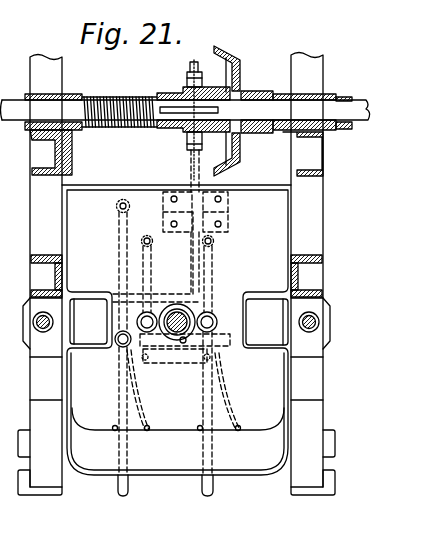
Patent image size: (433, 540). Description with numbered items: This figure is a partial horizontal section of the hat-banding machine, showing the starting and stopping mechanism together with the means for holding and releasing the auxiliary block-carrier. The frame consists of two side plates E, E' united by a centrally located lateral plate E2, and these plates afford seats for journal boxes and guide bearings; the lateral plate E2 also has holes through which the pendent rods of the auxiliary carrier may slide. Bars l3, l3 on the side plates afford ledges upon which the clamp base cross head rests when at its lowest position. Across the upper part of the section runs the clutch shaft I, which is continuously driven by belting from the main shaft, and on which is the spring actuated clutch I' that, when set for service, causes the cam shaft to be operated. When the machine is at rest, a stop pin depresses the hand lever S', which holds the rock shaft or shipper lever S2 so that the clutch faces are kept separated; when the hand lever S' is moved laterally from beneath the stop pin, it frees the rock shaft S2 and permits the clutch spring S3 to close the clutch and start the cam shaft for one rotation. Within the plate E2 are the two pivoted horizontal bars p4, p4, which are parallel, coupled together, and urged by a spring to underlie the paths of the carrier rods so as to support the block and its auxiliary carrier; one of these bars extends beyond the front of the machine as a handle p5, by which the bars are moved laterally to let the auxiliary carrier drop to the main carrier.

The clutch spring S3 is at (119, 97).
The spring actuated clutch I' is at (239, 97).
The clutch shaft I is at (185, 96).
The rock shaft or shipper lever S2 is at (135, 300).
The pivoted horizontal bars p4 is at (147, 313).
The bars l3 is at (288, 327).
The hand lever S' is at (104, 366).
The lateral plate E2 is at (175, 427).
The side plate E' is at (45, 298).
The handle p5 is at (211, 490).
The side plate E is at (309, 296).